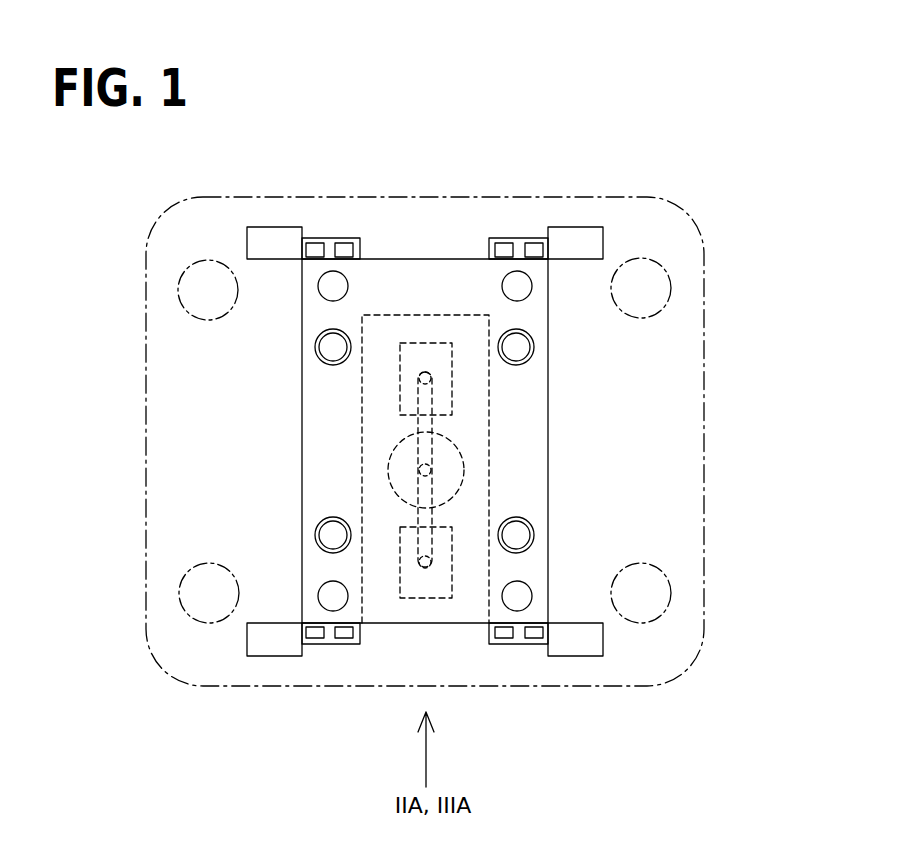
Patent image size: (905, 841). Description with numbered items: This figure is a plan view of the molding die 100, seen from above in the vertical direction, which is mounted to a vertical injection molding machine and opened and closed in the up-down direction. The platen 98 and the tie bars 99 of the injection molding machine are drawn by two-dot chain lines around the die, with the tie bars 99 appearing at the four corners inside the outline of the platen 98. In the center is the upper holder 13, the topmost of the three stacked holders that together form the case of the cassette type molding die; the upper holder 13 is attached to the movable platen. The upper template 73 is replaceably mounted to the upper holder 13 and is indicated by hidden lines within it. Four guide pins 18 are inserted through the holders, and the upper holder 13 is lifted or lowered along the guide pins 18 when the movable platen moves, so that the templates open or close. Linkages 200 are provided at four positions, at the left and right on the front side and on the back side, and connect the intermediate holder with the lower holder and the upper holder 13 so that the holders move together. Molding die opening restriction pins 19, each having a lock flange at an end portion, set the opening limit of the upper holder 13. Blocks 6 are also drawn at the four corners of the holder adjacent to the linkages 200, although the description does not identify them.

The molding die 100 is at (431, 208).
The platen 98 is at (683, 367).
The tie bars 99 is at (653, 282).
The upper holder 13 is at (338, 418).
The connector housing blocks 6 is at (283, 245).
The linkages 200 is at (336, 224).
The guide pin 18 is at (333, 286).
The molding die opening restriction pin 19 is at (332, 347).
The upper template 73 is at (388, 603).